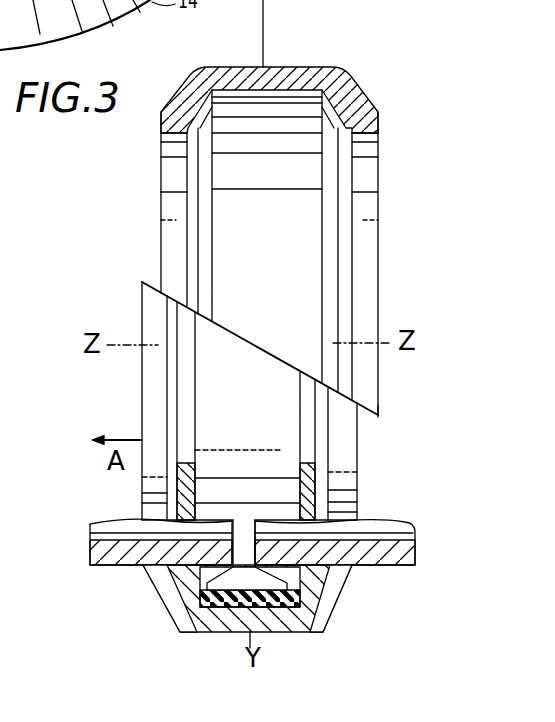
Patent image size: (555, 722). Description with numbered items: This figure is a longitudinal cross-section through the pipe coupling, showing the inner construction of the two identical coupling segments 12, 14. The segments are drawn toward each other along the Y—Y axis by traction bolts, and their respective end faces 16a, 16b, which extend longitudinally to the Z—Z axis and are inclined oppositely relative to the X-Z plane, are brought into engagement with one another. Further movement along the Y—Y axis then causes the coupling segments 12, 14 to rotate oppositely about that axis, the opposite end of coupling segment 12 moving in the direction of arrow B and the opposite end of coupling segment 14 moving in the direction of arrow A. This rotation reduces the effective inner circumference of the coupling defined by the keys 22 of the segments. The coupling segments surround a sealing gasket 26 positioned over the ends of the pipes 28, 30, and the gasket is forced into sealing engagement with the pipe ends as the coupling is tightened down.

The coupling segment 12 is at (300, 66).
The coupling segment 14 is at (323, 631).
The end face 16a is at (147, 282).
The end face 16b is at (368, 417).
The key 22 is at (150, 585).
The sealing gasket 26 is at (197, 633).
The pipe 28 is at (112, 558).
The pipe 30 is at (387, 557).